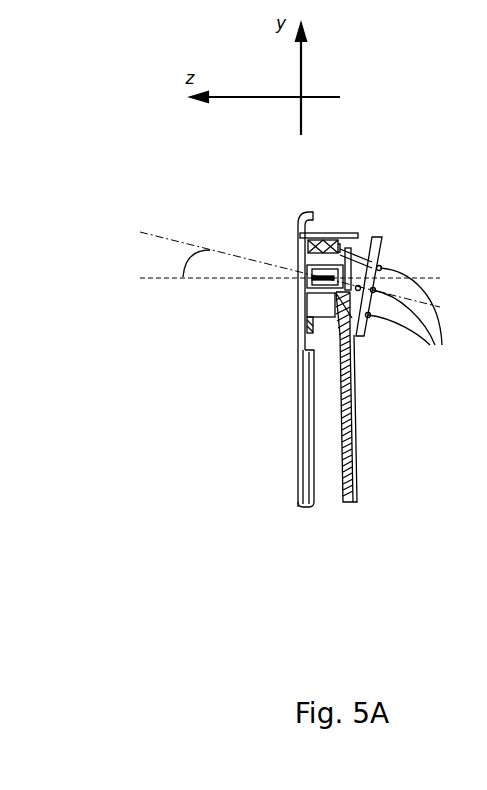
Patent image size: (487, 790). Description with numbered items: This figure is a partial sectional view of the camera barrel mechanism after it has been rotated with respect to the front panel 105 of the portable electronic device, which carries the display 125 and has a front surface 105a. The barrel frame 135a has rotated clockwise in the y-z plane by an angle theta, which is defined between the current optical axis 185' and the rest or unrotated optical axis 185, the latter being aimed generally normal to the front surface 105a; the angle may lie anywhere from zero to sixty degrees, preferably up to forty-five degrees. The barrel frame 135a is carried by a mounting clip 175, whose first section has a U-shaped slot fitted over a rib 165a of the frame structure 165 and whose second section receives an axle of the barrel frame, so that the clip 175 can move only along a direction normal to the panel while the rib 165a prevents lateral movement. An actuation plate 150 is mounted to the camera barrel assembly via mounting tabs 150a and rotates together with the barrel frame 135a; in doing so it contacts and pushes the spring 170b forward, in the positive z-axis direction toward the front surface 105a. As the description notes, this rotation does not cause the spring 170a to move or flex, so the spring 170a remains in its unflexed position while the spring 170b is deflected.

The front panel 105 is at (300, 340).
The front surface 105a is at (290, 317).
The display 125 is at (299, 445).
The barrel frame 135a is at (354, 336).
The actuation plate 150 is at (380, 241).
The mounting tabs 150a is at (418, 318).
The frame structure 165 is at (327, 222).
The rib 165a is at (305, 278).
The spring 170a is at (352, 435).
The spring 170b is at (352, 368).
The mounting clip 175 is at (300, 234).
The optical axis 185 is at (266, 284).
The current optical axis 185' is at (281, 254).